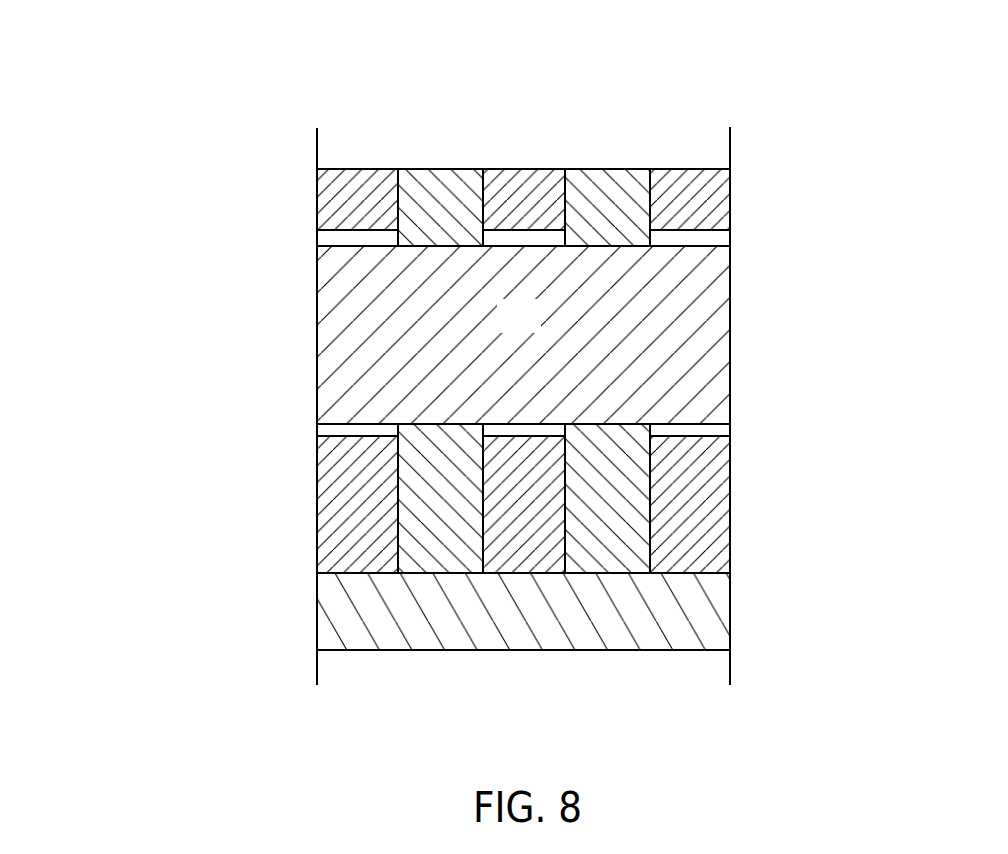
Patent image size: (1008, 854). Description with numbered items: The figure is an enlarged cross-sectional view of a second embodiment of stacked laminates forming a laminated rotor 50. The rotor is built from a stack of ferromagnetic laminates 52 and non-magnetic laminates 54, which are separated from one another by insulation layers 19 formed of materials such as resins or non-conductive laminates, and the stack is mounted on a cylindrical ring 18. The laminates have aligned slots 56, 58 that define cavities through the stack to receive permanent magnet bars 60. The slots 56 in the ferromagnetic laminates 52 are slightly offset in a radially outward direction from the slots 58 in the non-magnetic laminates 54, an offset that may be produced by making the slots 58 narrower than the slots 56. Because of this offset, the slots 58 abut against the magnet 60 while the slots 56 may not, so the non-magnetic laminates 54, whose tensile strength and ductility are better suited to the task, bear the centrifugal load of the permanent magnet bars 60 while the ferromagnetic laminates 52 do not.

The cylindrical ring 18 is at (730, 620).
The insulation layers 19 is at (398, 168).
The laminated rotor 50 is at (454, 352).
The ferromagnetic laminates 52 is at (344, 168).
The non-magnetic laminates 54 is at (436, 168).
The slots in ferromagnetic laminates 56 is at (333, 239).
The slots in non-magnetic laminates 58 is at (437, 248).
The permanent magnet bars 60 is at (535, 328).